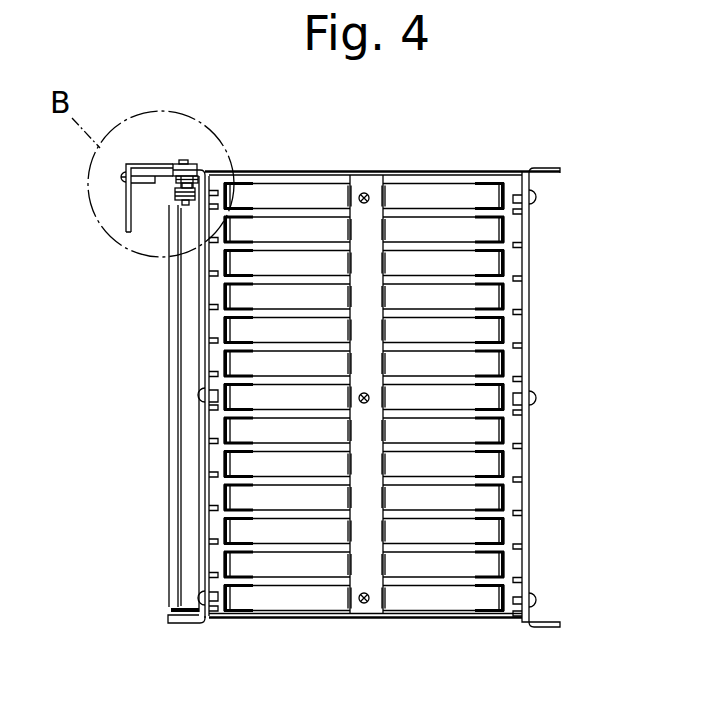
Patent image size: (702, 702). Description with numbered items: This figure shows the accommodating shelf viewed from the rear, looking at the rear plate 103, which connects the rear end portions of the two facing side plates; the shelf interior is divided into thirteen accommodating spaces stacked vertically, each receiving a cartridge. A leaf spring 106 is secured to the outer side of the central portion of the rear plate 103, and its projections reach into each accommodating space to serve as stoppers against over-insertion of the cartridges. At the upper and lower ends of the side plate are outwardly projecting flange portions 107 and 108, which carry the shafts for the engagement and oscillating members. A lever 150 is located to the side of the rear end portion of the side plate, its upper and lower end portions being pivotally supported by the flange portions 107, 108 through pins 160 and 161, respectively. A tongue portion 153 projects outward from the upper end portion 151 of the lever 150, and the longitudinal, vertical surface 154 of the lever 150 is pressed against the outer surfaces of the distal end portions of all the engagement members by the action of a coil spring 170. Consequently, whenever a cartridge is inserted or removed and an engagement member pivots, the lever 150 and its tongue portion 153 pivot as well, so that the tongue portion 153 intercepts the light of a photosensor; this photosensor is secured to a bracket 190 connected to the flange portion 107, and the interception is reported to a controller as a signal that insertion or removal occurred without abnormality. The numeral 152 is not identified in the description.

The rear plate 103 is at (452, 178).
The leaf spring 106 is at (389, 196).
The flange portion 107 is at (197, 180).
The flange portion 108 is at (190, 630).
The lever 150 is at (166, 397).
The upper end portion 151 is at (203, 171).
The bottom plate 152 is at (365, 646).
The tongue portion 153 is at (158, 176).
The longitudinal surface 154 is at (178, 439).
The pin 160 is at (175, 170).
The pin 161 is at (172, 611).
The coil spring 170 is at (181, 198).
The bracket 190 is at (123, 180).